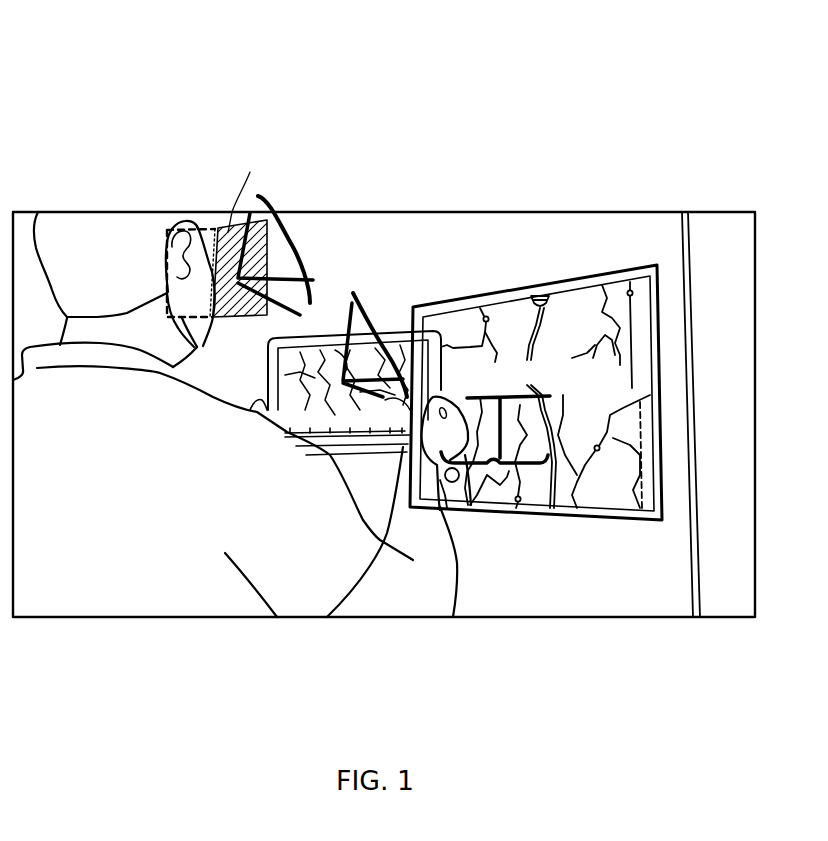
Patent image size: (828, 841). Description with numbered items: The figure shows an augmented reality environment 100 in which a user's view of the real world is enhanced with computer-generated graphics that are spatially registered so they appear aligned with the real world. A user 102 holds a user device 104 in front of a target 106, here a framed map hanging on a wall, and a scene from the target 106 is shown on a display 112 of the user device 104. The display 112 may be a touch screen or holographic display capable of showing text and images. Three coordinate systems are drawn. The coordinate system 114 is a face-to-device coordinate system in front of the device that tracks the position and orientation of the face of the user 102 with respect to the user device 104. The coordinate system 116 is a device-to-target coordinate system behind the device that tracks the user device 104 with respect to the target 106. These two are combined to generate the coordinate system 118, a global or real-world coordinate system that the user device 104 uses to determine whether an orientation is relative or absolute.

The augmented reality environment 100 is at (175, 72).
The user 102 is at (108, 212).
The user device 104 is at (283, 390).
The target 106 is at (633, 268).
The display 112 is at (335, 442).
The coordinate system 114 is at (297, 250).
The coordinate system 116 is at (388, 345).
The coordinate system 118 is at (500, 483).